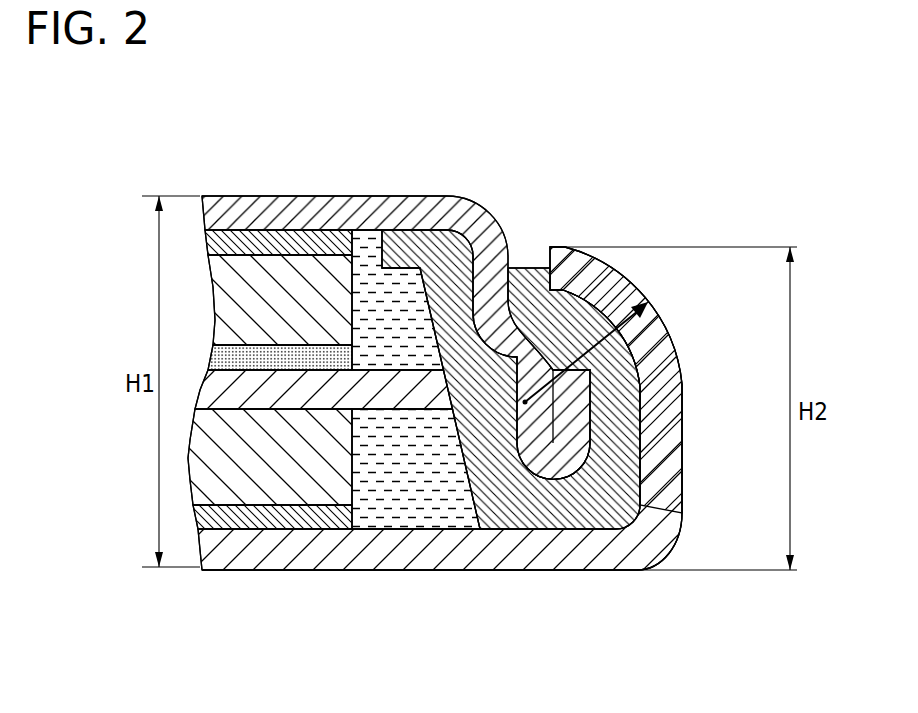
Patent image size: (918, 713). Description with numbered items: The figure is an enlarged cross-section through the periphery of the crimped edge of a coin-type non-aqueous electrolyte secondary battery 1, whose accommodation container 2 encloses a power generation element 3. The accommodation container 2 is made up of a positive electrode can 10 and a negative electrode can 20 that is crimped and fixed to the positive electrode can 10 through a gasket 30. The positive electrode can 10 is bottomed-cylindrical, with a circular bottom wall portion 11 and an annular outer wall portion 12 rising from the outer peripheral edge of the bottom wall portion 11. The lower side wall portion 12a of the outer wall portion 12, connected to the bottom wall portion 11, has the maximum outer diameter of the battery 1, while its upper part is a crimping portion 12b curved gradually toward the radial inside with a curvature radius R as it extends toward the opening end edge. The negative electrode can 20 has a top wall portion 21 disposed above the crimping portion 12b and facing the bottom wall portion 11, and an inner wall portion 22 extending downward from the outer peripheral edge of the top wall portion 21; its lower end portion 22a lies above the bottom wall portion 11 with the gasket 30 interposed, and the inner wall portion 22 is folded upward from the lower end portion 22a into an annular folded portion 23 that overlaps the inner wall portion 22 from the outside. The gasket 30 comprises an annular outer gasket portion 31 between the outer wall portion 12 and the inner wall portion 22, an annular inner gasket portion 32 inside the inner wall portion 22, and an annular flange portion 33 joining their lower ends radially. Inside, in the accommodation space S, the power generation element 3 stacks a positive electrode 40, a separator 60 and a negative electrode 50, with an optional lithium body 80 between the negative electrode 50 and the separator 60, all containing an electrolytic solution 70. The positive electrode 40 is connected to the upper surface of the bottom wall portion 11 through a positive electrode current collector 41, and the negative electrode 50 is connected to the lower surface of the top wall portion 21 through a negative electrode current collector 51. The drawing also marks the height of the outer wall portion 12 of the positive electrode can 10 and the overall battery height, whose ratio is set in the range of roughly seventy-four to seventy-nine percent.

The non-aqueous electrolyte secondary battery 1 is at (507, 383).
The accommodation container 2 is at (690, 541).
The power generation element 3 is at (366, 259).
The positive electrode can 10 is at (587, 572).
The bottom wall portion 11 is at (344, 571).
The outer wall portion 12 is at (665, 380).
The lower side wall portion 12a is at (667, 458).
The crimping portion 12b is at (643, 323).
The negative electrode can 20 is at (285, 190).
The top wall portion 21 is at (437, 200).
The inner wall portion 22 is at (492, 297).
The lower end portion 22a is at (560, 462).
The folded portion 23 is at (582, 398).
The gasket 30 is at (619, 538).
The outer gasket portion 31 is at (630, 418).
The inner gasket portion 32 is at (440, 493).
The flange portion 33 is at (540, 513).
The positive electrode 40 is at (268, 483).
The positive electrode current collector 41 is at (308, 520).
The negative electrode 50 is at (277, 268).
The negative electrode current collector 51 is at (328, 245).
The separator 60 is at (230, 393).
The electrolytic solution 70 is at (383, 320).
The lithium body 80 is at (255, 355).
The accommodation space S is at (420, 483).
The curvature radius R is at (588, 337).